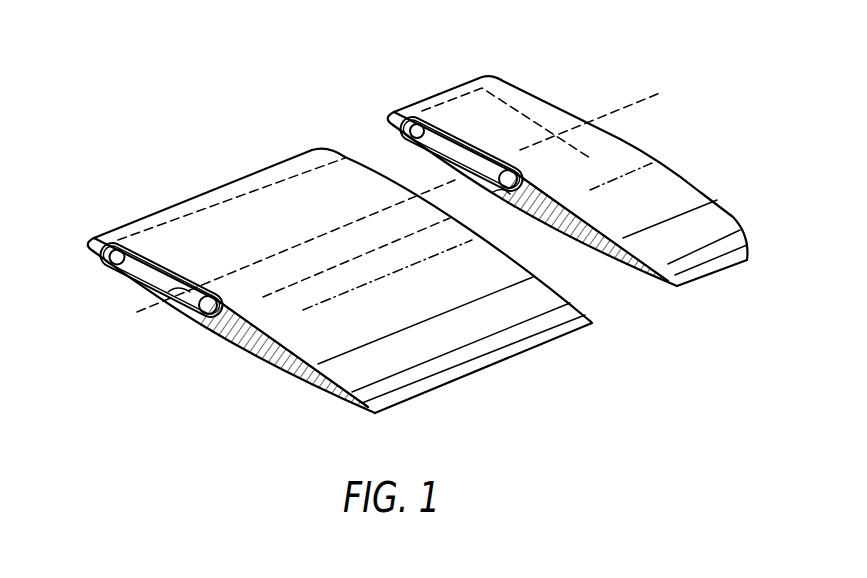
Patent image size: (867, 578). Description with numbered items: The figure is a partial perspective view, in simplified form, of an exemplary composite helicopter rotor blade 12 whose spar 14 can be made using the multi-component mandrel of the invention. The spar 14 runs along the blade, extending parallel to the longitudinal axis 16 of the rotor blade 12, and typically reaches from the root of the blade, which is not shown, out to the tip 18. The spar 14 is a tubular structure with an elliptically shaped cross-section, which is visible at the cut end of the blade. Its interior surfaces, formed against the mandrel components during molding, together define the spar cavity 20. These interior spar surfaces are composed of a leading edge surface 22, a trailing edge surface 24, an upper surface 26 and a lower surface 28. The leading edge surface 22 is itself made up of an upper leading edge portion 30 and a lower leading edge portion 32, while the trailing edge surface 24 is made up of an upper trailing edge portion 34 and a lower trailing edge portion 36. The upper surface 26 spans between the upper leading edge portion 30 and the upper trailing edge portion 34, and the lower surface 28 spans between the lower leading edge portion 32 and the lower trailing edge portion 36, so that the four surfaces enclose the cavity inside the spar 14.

The helicopter rotor blade 12 is at (181, 90).
The spar 14 is at (170, 300).
The longitudinal axis 16 is at (422, 195).
The tip 18 is at (521, 93).
The spar cavity 20 is at (122, 276).
The leading edge surface 22 is at (125, 266).
The trailing edge surface 24 is at (202, 300).
The upper surface 26 is at (182, 292).
The lower surface 28 is at (150, 275).
The upper leading edge portion 30 is at (422, 127).
The lower leading edge portion 32 is at (413, 136).
The upper trailing edge portion 34 is at (505, 172).
The lower trailing edge portion 36 is at (498, 183).